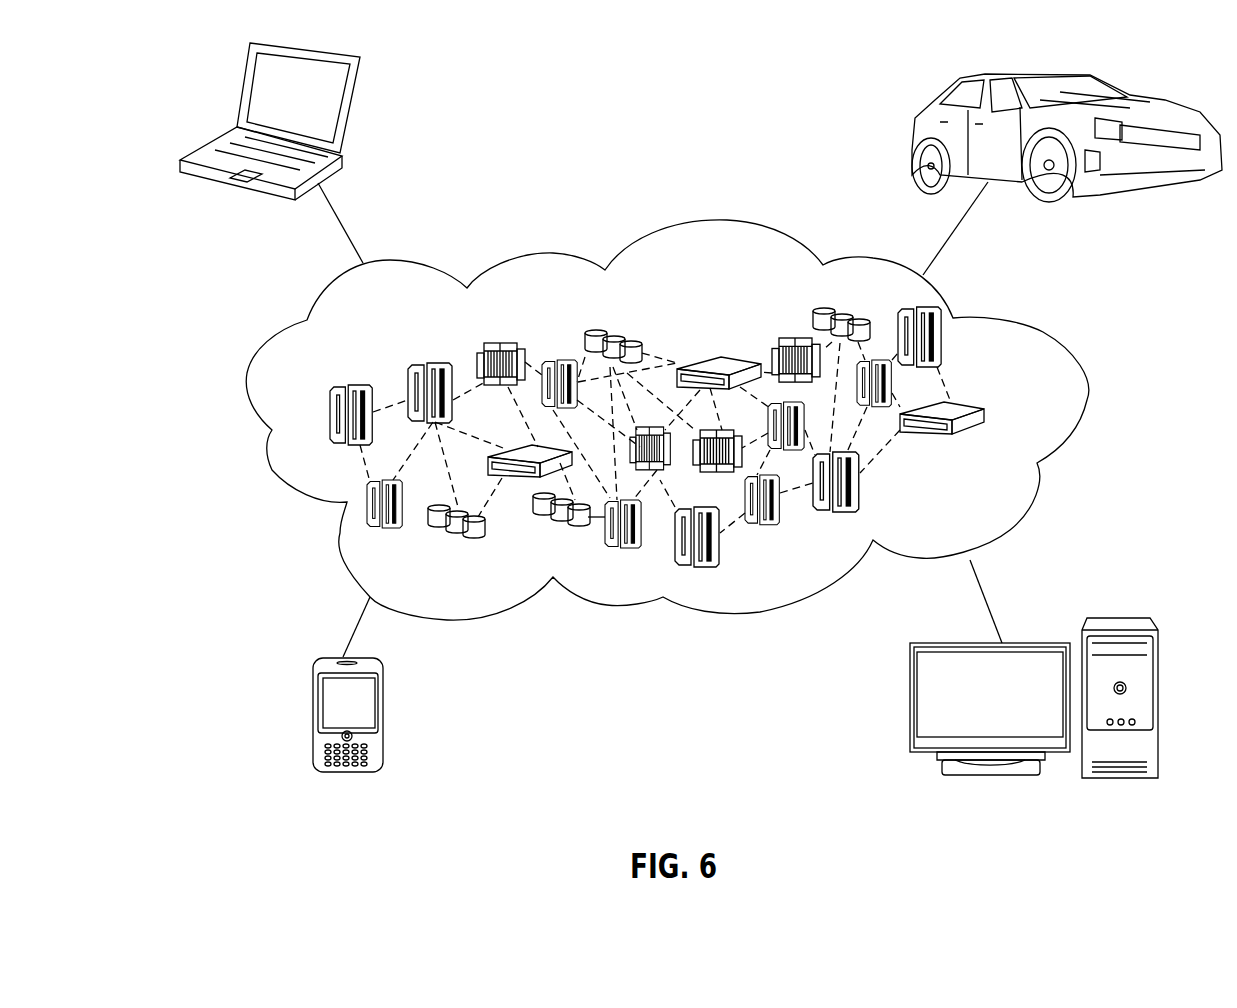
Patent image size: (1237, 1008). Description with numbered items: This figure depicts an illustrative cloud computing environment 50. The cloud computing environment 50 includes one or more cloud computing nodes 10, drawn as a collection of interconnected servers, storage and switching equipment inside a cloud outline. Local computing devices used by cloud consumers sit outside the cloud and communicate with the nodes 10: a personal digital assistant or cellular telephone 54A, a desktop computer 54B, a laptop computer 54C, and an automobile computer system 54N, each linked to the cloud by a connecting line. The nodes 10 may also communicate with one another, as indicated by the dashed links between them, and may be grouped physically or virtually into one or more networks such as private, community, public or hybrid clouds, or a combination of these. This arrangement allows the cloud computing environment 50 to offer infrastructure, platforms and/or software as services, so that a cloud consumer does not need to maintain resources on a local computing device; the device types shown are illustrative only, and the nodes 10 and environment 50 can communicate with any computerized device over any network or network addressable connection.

The cloud computing node 10 is at (1020, 415).
The cloud computing environment 50 is at (1043, 332).
The personal digital assistant or cellular telephone 54A is at (313, 720).
The desktop computer 54B is at (1123, 618).
The laptop computer 54C is at (352, 110).
The automobile computer system 54N is at (920, 117).